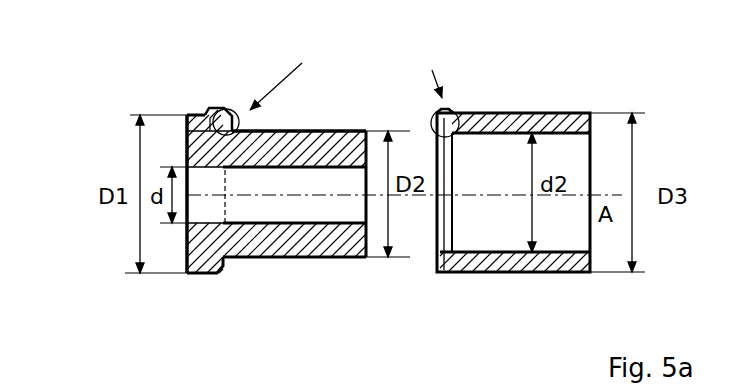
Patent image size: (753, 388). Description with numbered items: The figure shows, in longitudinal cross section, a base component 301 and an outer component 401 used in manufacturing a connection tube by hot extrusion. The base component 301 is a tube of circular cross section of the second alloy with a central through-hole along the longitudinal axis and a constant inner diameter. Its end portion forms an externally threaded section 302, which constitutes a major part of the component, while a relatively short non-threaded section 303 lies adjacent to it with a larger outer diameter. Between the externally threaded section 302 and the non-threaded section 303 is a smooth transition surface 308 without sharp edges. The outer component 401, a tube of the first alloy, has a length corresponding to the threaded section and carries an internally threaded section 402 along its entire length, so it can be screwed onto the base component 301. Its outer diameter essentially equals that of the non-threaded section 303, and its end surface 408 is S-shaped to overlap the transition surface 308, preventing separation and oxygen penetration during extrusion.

The base component 301 is at (273, 274).
The externally threaded section 302 is at (322, 131).
The non-threaded section 303 is at (200, 118).
The transition surface 308 is at (232, 113).
The outer component 401 is at (506, 93).
The internally threaded section 402 is at (487, 275).
The end surface 408 is at (433, 110).